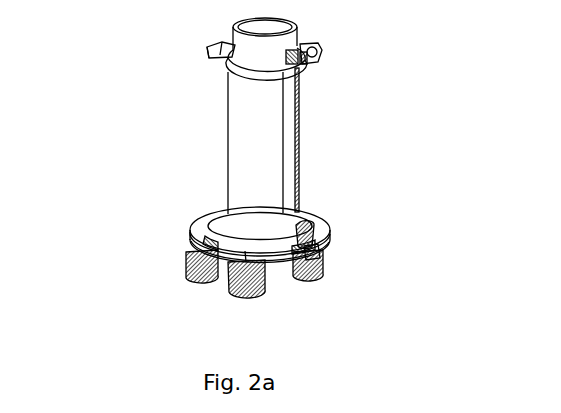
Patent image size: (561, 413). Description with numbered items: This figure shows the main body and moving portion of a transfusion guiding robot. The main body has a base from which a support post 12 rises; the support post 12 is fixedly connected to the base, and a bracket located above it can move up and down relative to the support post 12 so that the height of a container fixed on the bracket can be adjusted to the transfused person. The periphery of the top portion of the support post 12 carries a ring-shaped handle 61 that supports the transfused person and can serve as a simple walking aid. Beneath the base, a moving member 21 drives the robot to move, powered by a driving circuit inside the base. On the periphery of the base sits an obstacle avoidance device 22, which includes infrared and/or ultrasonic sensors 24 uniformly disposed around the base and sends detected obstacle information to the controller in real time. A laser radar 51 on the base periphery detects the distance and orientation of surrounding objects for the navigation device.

The support post 12 is at (250, 122).
The upper flange 61 is at (322, 59).
The laser radar 51 is at (325, 234).
The obstacle avoidance device 22 is at (193, 249).
The moving member 21 is at (190, 270).
The infrared sensors and/or ultrasonic sensors 24 is at (323, 258).